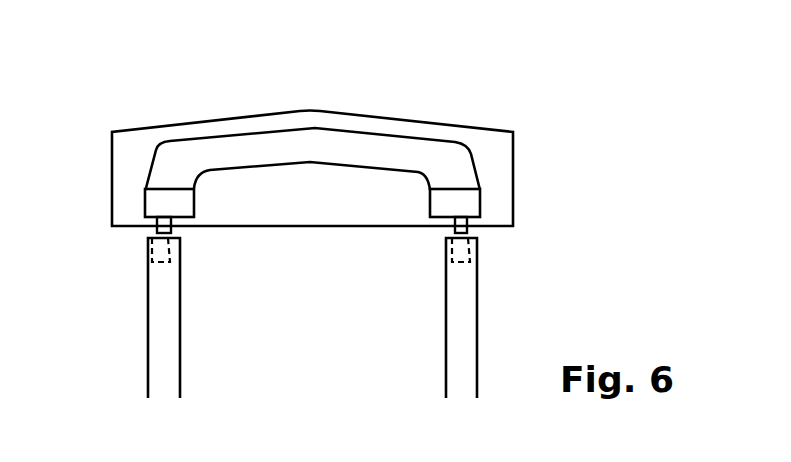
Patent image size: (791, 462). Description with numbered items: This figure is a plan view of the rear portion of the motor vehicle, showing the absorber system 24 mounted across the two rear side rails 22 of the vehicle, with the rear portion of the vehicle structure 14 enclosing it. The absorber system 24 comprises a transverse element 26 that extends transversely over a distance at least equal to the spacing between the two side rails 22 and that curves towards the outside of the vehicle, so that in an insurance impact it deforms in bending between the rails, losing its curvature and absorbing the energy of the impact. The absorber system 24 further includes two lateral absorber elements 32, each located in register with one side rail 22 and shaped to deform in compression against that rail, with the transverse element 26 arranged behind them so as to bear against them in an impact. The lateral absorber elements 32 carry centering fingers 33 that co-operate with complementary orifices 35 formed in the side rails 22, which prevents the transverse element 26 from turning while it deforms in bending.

The housing 14 is at (513, 185).
The rear side rails 22 is at (162, 322).
The absorber system 24 is at (180, 94).
The transverse element 26 is at (347, 141).
The lateral absorber elements 32 is at (168, 198).
The centering fingers 33 is at (150, 233).
The complementary orifices 35 is at (151, 262).